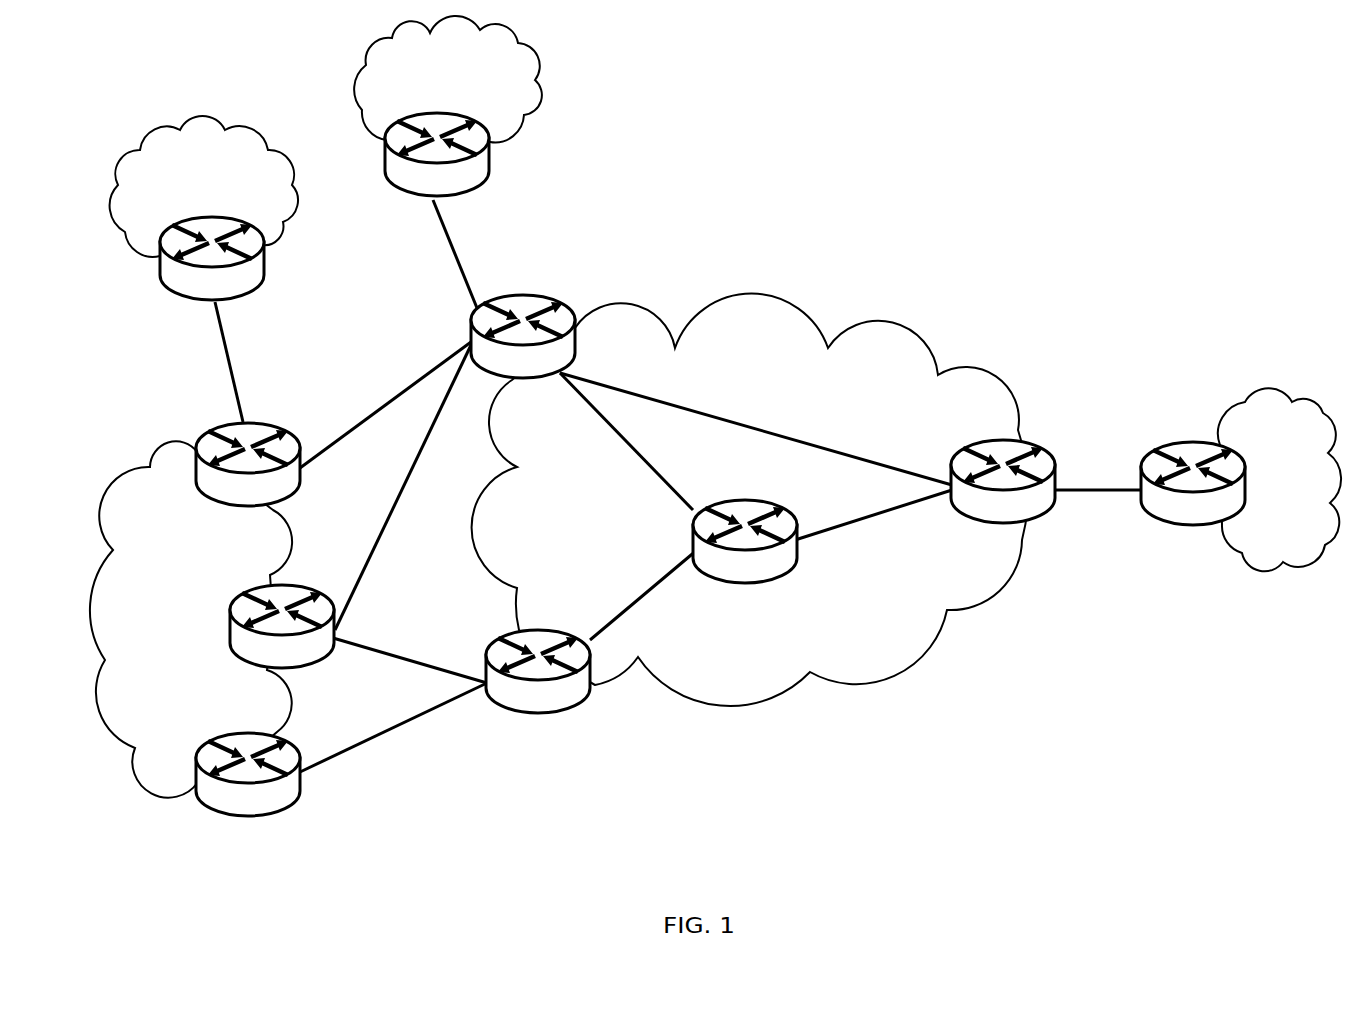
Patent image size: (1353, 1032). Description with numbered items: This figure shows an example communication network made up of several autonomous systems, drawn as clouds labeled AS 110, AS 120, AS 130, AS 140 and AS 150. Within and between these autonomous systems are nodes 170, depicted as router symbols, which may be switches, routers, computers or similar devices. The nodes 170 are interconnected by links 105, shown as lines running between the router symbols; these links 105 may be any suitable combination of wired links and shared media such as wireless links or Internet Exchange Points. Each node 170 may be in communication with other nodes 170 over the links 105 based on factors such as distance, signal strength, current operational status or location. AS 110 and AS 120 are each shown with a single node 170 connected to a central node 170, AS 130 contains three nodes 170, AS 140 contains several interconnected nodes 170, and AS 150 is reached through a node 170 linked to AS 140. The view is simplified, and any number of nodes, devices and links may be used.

The links 105 is at (679, 489).
The nodes 170 is at (675, 487).
The AS 110 is at (240, 202).
The AS 120 is at (490, 101).
The AS 130 is at (198, 652).
The AS 140 is at (783, 677).
The AS 150 is at (1262, 516).